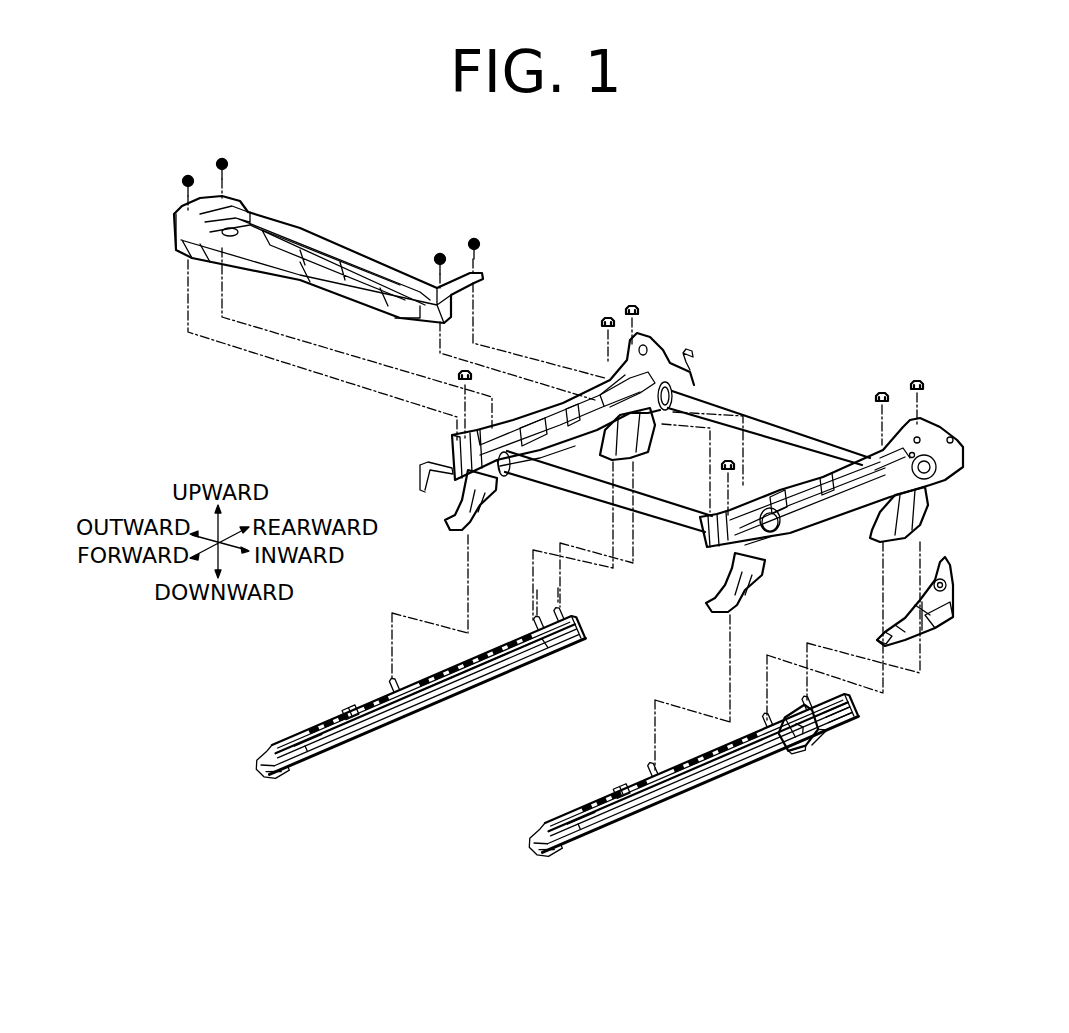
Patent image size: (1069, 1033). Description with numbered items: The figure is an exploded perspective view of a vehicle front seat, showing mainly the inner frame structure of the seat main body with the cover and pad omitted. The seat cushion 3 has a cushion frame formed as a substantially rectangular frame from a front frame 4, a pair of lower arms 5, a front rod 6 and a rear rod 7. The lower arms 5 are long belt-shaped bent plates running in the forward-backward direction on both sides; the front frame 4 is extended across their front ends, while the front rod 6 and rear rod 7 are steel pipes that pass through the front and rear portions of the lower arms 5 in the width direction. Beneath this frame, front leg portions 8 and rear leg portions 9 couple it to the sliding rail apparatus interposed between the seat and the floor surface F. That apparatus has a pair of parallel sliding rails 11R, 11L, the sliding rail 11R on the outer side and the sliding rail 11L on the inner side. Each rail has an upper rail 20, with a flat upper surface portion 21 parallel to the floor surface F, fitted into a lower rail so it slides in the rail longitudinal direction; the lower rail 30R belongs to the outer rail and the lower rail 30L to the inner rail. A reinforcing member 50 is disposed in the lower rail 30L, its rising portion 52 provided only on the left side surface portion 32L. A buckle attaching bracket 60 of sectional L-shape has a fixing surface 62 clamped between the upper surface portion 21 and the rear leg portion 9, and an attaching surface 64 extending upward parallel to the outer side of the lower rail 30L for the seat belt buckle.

The seat cushion 3 is at (744, 256).
The front frame 4 is at (318, 258).
The lower arm 5 is at (567, 423).
The front rod 6 is at (575, 482).
The rear rod 7 is at (780, 423).
The front leg portion 8 is at (450, 520).
The rear leg portion 9 is at (650, 447).
The sliding rail 11R is at (417, 735).
The sliding rail 11L is at (653, 782).
The upper rail 20 is at (460, 683).
The upper surface portion 21 is at (837, 738).
The lower rail 30R is at (285, 785).
The lower rail 30L is at (655, 810).
The left side surface portion 32L is at (775, 767).
The reinforcing member 50 is at (802, 768).
The rising portion 52 is at (820, 752).
The buckle attaching bracket 60 is at (930, 621).
The fixing surface 62 is at (880, 640).
The attaching surface 64 is at (937, 613).
The floor surface F is at (542, 763).